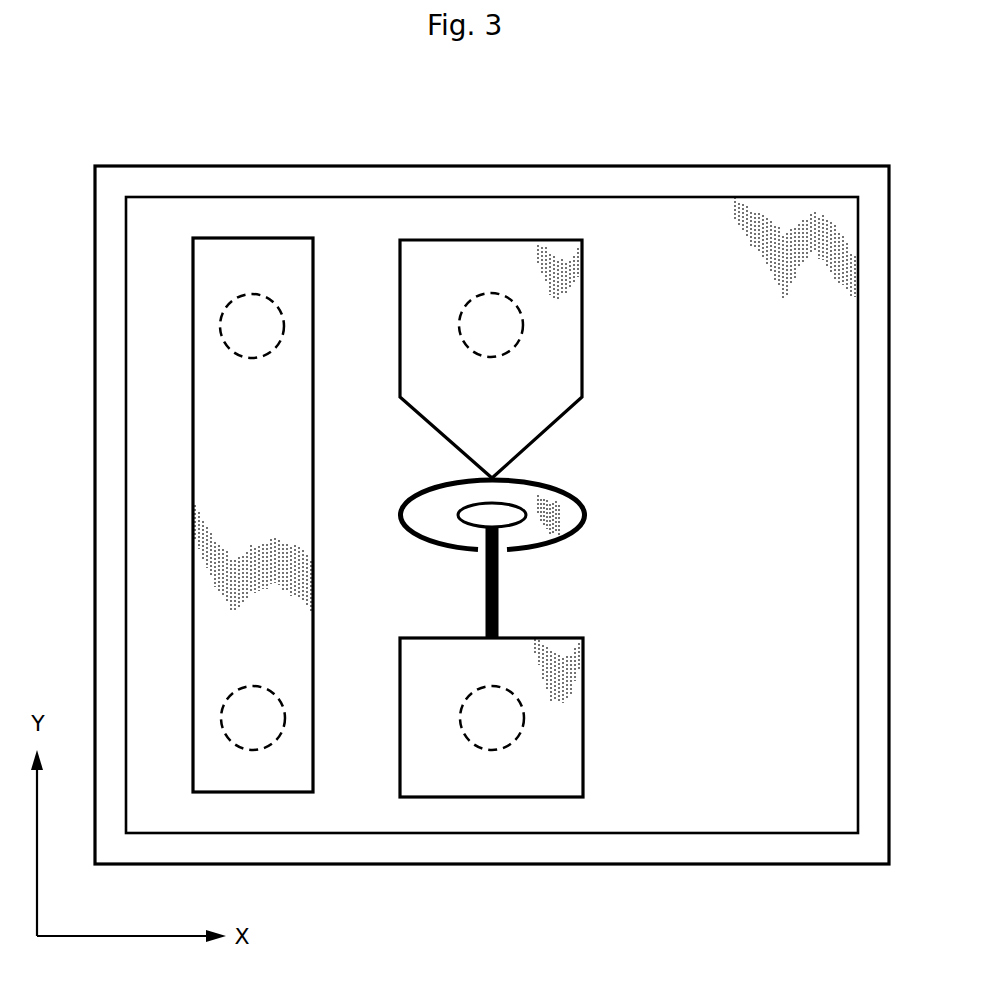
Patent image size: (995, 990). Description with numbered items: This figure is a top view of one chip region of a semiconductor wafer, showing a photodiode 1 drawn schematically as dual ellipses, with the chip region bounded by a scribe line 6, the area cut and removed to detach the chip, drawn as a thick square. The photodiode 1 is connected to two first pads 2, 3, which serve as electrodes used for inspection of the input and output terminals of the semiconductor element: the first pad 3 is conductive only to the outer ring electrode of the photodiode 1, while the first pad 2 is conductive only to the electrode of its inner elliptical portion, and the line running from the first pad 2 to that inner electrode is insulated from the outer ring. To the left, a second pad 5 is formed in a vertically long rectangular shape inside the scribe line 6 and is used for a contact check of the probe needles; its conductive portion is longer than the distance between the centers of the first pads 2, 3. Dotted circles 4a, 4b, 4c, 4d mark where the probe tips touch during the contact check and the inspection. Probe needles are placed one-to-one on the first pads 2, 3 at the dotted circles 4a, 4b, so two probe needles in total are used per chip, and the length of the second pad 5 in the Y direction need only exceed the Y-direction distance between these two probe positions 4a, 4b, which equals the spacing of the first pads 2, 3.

The photodiode 1 is at (585, 510).
The first pad 2 is at (583, 720).
The first pad 3 is at (583, 318).
The probe needle position 4a is at (461, 727).
The probe needle position 4b is at (460, 328).
The probe needle position 4c is at (231, 698).
The probe needle position 4d is at (222, 327).
The second pad 5 is at (252, 238).
The scribe line 6 is at (480, 166).